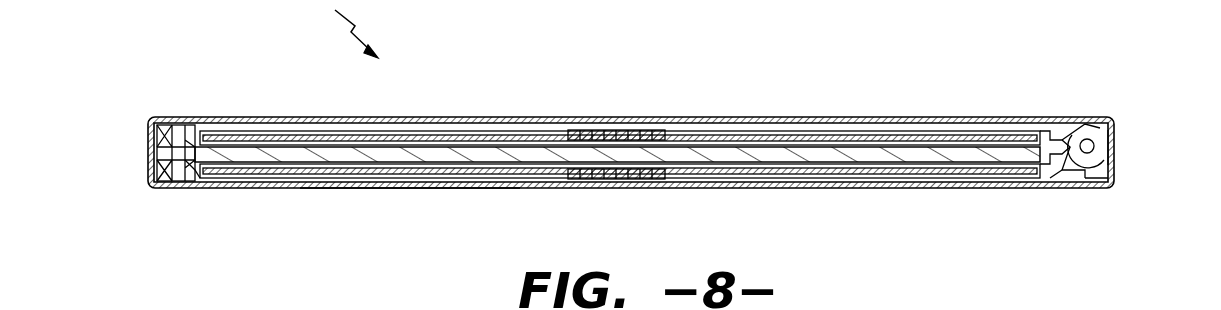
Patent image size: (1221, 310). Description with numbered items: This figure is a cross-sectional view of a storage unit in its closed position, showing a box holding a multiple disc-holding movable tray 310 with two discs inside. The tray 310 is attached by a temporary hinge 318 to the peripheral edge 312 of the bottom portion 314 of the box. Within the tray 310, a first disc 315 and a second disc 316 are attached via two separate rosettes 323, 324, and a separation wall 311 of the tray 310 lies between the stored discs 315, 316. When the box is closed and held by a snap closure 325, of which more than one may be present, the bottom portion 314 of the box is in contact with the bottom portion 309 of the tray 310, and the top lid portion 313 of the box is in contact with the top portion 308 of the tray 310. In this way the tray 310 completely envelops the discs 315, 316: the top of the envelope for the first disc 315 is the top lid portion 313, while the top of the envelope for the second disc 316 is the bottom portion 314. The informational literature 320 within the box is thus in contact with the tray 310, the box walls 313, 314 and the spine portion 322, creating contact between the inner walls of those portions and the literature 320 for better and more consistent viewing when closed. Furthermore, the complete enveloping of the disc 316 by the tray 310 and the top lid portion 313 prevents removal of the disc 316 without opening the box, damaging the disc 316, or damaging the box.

The top portion of the tray 308 is at (1062, 138).
The bottom portion of the tray 309 is at (190, 177).
The movable tray 310 is at (152, 138).
The separation wall 311 is at (478, 150).
The peripheral edge 312 is at (1108, 168).
The top lid portion 313 is at (372, 120).
The bottom portion of the box 314 is at (407, 188).
The first disc 315 is at (302, 133).
The second disc 316 is at (290, 176).
The temporary hinge 318 is at (1116, 145).
The informational literature 320 is at (154, 158).
The spine portion 322 is at (154, 152).
The rosette 323 is at (622, 130).
The rosette 324 is at (615, 179).
The snap closure 325 is at (1094, 146).